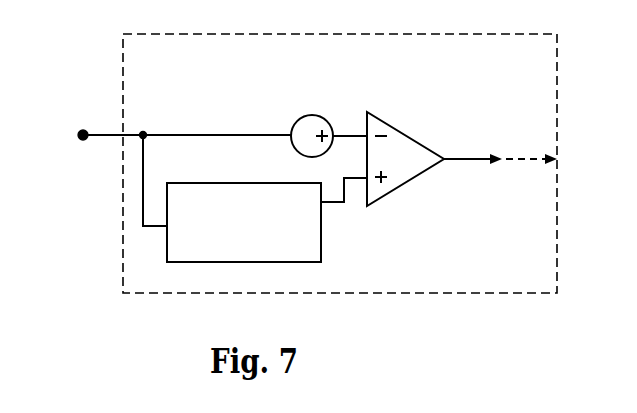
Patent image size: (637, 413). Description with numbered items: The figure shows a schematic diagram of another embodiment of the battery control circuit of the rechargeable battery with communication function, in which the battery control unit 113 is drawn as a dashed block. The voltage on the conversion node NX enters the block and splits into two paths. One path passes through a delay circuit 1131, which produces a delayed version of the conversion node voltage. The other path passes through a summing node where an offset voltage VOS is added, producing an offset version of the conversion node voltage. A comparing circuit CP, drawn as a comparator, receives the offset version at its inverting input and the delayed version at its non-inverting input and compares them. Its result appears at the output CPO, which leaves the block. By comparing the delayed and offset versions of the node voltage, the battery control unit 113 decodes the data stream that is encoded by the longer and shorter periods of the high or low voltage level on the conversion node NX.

The battery control unit 113 is at (301, 163).
The delay circuit 1131 is at (272, 253).
The conversion node NX is at (79, 122).
The offset voltage VOS is at (312, 115).
The comparing circuit CP is at (441, 150).
The comparator output CPO is at (500, 173).